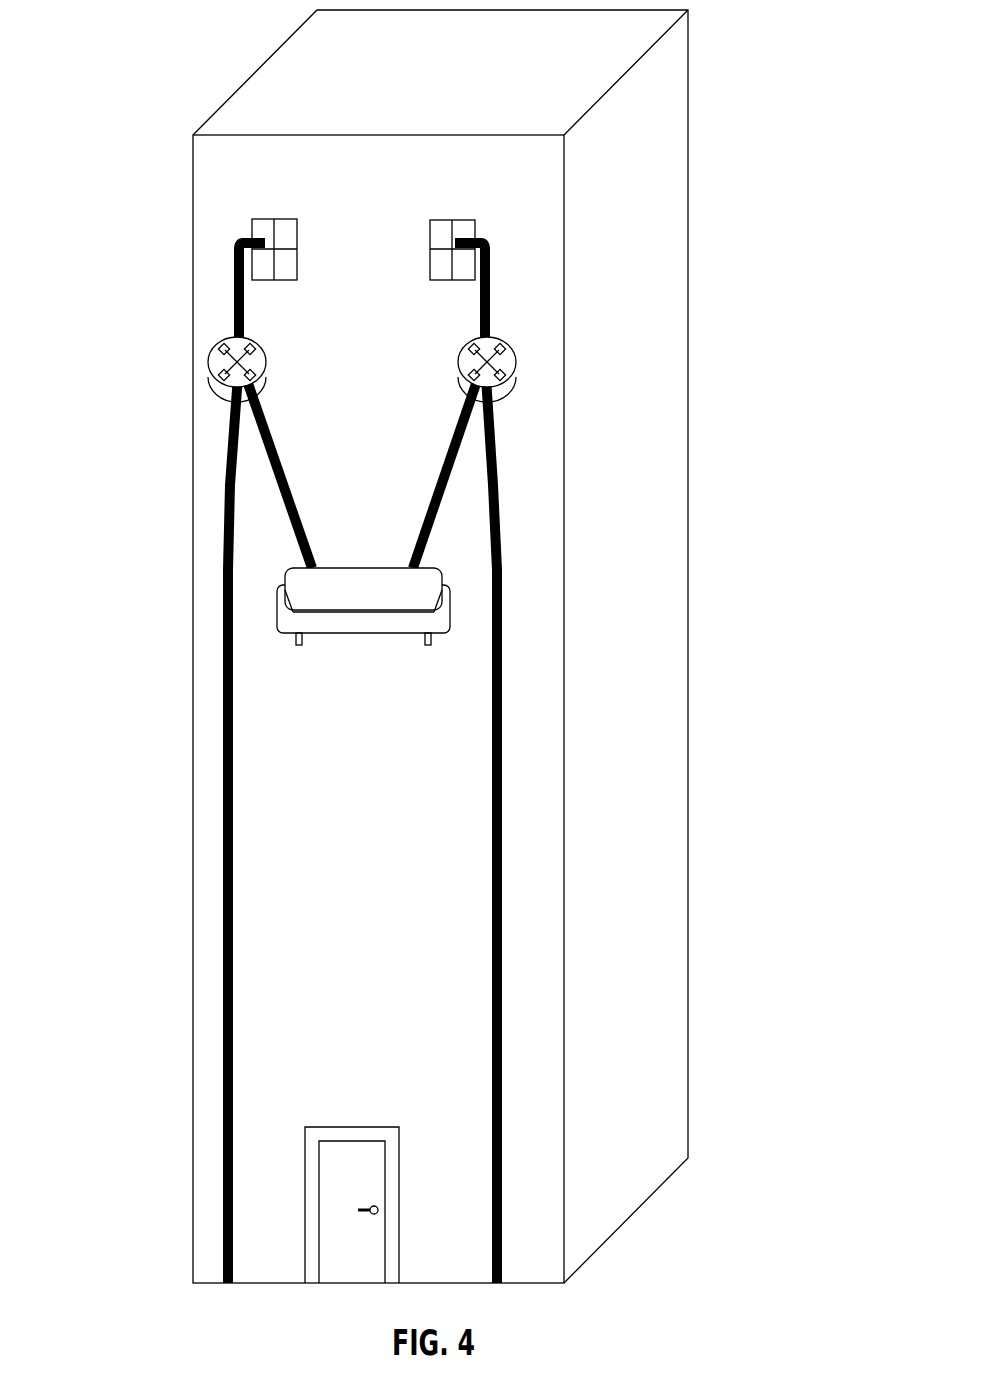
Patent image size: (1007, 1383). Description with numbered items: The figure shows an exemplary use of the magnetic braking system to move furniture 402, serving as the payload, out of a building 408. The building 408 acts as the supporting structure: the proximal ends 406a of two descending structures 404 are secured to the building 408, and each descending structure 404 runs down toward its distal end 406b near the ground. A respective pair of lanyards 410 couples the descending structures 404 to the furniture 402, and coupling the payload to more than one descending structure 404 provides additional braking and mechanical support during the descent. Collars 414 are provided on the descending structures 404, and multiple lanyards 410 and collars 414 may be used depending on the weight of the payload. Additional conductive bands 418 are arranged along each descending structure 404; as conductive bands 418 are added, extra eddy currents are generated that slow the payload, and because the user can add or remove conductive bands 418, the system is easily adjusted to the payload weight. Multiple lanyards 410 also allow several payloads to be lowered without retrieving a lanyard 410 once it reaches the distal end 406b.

The furniture 402 is at (370, 623).
The descending structure 404 is at (233, 280).
The proximal end 406a is at (204, 258).
The distal end 406b is at (200, 1253).
The building 408 is at (668, 85).
The lanyard 410 is at (445, 430).
The collar 414 is at (210, 377).
The conductive band 418 is at (212, 730).